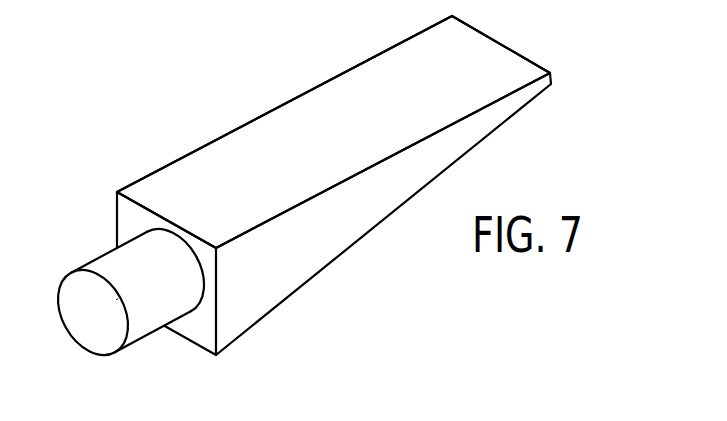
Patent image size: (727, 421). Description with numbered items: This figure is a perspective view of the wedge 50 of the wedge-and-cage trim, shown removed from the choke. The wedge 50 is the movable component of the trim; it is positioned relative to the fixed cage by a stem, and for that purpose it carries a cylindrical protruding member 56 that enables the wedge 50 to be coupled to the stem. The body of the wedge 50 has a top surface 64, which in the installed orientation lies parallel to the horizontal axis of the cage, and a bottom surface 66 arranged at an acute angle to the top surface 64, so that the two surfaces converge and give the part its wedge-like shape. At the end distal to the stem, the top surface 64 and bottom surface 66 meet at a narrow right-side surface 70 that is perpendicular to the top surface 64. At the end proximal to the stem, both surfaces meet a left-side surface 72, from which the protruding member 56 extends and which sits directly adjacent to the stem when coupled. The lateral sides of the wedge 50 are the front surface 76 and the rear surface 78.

The wedge 50 is at (337, 181).
The protruding member 56 is at (95, 263).
The top surface 64 is at (409, 67).
The bottom surface 66 is at (332, 263).
The right-side surface 70 is at (552, 78).
The left-side surface 72 is at (133, 225).
The front surface 76 is at (398, 183).
The rear surface 78 is at (283, 101).